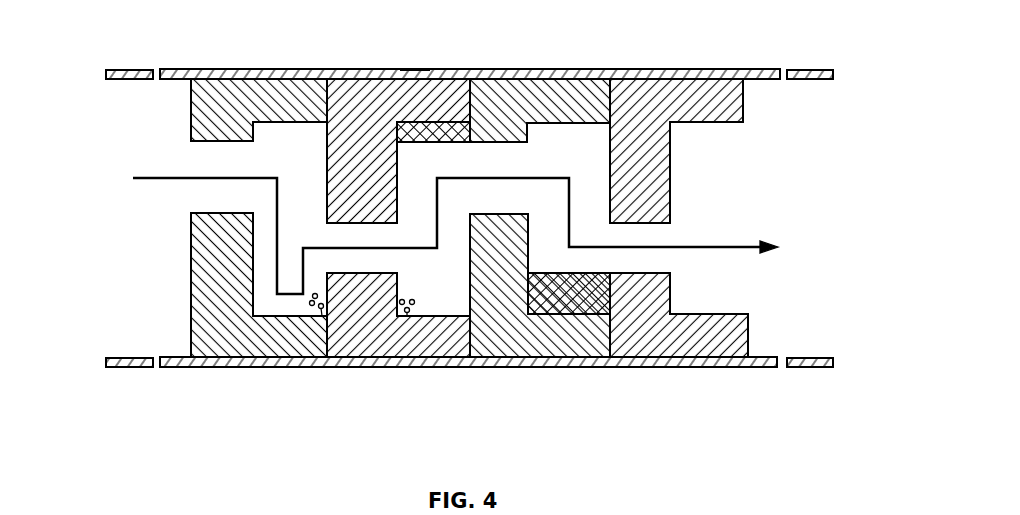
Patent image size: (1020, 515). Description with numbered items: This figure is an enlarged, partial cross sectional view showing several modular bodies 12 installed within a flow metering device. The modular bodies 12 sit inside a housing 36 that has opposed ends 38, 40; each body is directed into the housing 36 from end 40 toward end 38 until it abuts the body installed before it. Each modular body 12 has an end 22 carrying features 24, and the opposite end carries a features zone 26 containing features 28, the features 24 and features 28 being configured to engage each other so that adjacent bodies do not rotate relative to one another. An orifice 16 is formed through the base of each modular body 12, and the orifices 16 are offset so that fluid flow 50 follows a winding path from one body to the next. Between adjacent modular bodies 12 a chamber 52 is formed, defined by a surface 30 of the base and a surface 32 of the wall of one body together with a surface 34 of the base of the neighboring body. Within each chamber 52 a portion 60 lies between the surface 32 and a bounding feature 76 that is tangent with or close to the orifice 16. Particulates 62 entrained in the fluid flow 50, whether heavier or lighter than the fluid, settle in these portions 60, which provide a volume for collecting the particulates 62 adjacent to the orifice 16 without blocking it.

The modular body 12 is at (273, 70).
The orifice 16 is at (207, 165).
The end 22 is at (743, 88).
The features 24 is at (743, 122).
The features zone 26 is at (610, 80).
The features 28 is at (610, 100).
The surface 30 is at (258, 246).
The surface 32 is at (262, 312).
The surface 34 is at (325, 183).
The housing 36 is at (415, 70).
The end 38 is at (103, 73).
The end 40 is at (838, 73).
The fluid flow 50 is at (740, 247).
The chamber 52 is at (382, 151).
The portion 60 is at (405, 125).
The particulates 62 is at (320, 310).
The bounding feature 76 is at (580, 273).